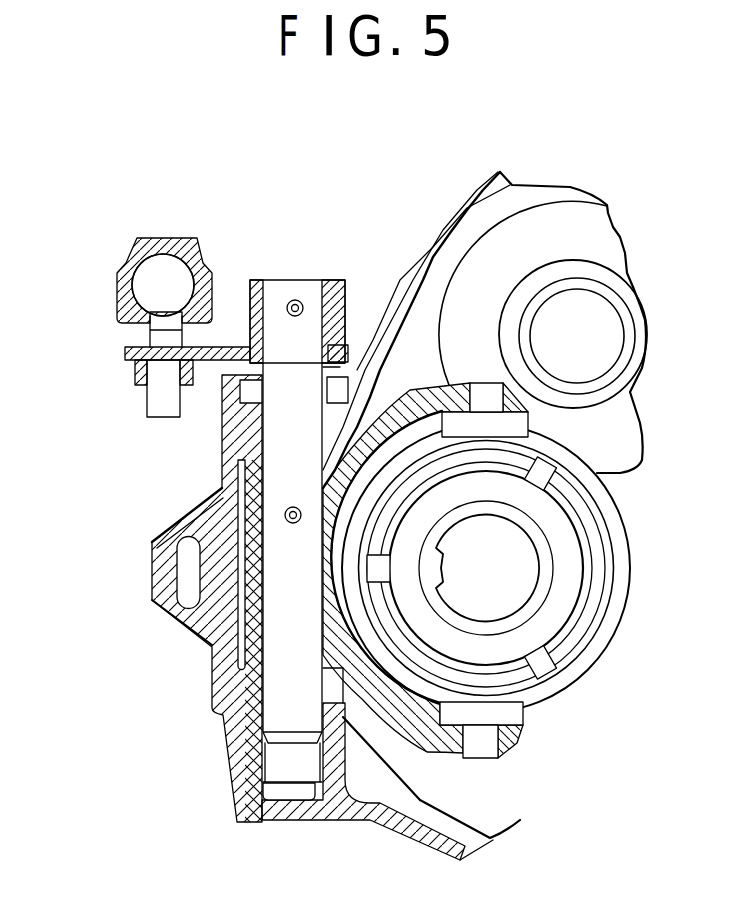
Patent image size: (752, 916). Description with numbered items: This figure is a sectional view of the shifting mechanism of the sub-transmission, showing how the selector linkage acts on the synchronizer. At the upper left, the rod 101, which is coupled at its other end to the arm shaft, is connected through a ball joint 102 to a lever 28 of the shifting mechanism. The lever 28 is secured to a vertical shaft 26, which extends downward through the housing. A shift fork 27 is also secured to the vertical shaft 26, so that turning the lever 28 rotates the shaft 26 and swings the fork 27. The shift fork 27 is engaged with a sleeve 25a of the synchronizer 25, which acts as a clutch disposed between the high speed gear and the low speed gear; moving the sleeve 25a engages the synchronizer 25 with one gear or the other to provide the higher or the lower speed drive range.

The synchronizer 25 is at (620, 637).
The sleeve 25a is at (628, 543).
The vertical shaft 26 is at (272, 712).
The shift fork 27 is at (407, 403).
The lever 28 is at (217, 357).
The rod 101 is at (178, 250).
The ball joint 102 is at (143, 282).